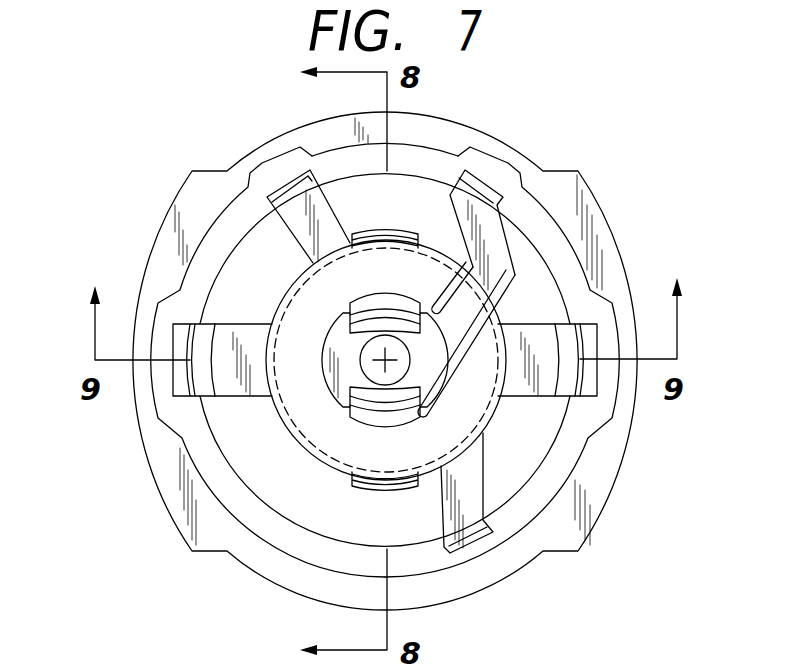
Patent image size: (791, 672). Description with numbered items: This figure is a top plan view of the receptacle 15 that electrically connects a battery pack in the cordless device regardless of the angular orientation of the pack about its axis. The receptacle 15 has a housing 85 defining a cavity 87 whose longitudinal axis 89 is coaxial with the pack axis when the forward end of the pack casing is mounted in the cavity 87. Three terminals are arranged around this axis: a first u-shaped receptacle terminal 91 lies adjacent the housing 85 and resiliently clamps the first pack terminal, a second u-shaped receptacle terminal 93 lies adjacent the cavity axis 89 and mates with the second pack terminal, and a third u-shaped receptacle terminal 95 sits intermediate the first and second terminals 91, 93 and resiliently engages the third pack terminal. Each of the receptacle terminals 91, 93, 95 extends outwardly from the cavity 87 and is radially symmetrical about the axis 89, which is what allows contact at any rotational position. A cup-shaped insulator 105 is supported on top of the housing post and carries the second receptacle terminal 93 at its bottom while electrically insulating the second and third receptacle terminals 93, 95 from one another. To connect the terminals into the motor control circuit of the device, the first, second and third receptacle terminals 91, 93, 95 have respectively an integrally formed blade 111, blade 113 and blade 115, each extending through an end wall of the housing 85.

The receptacle 15 is at (612, 138).
The housing 85 is at (165, 458).
The cavity 87 is at (268, 485).
The longitudinal axis 89 is at (340, 390).
The first u-shaped receptacle terminal 91 is at (202, 340).
The second u-shaped receptacle terminal 93 is at (370, 327).
The third u-shaped receptacle terminal 95 is at (367, 233).
The cup-shaped insulator 105 is at (447, 427).
The blade 111 is at (290, 187).
The blade 113 is at (478, 190).
The blade 115 is at (470, 537).